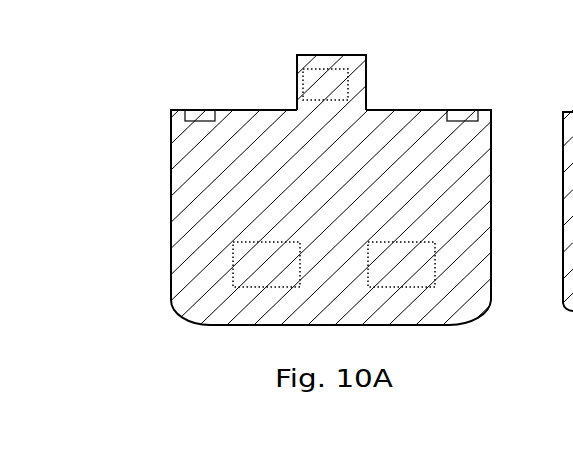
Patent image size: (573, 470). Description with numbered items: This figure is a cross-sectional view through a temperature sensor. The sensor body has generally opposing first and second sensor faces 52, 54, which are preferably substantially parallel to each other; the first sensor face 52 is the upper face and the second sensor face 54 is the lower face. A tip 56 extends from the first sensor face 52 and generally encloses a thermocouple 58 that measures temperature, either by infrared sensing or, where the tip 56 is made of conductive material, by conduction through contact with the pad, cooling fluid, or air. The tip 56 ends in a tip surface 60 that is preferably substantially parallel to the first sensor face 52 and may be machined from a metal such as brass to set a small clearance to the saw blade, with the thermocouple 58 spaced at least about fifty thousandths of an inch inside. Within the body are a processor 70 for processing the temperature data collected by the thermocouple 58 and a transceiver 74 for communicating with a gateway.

The first sensor face 52 is at (238, 110).
The second sensor face 54 is at (232, 327).
The tip 56 is at (366, 84).
The thermocouple 58 is at (325, 84).
The tip surface 60 is at (331, 54).
The processor 70 is at (401, 264).
The transceiver 74 is at (266, 264).